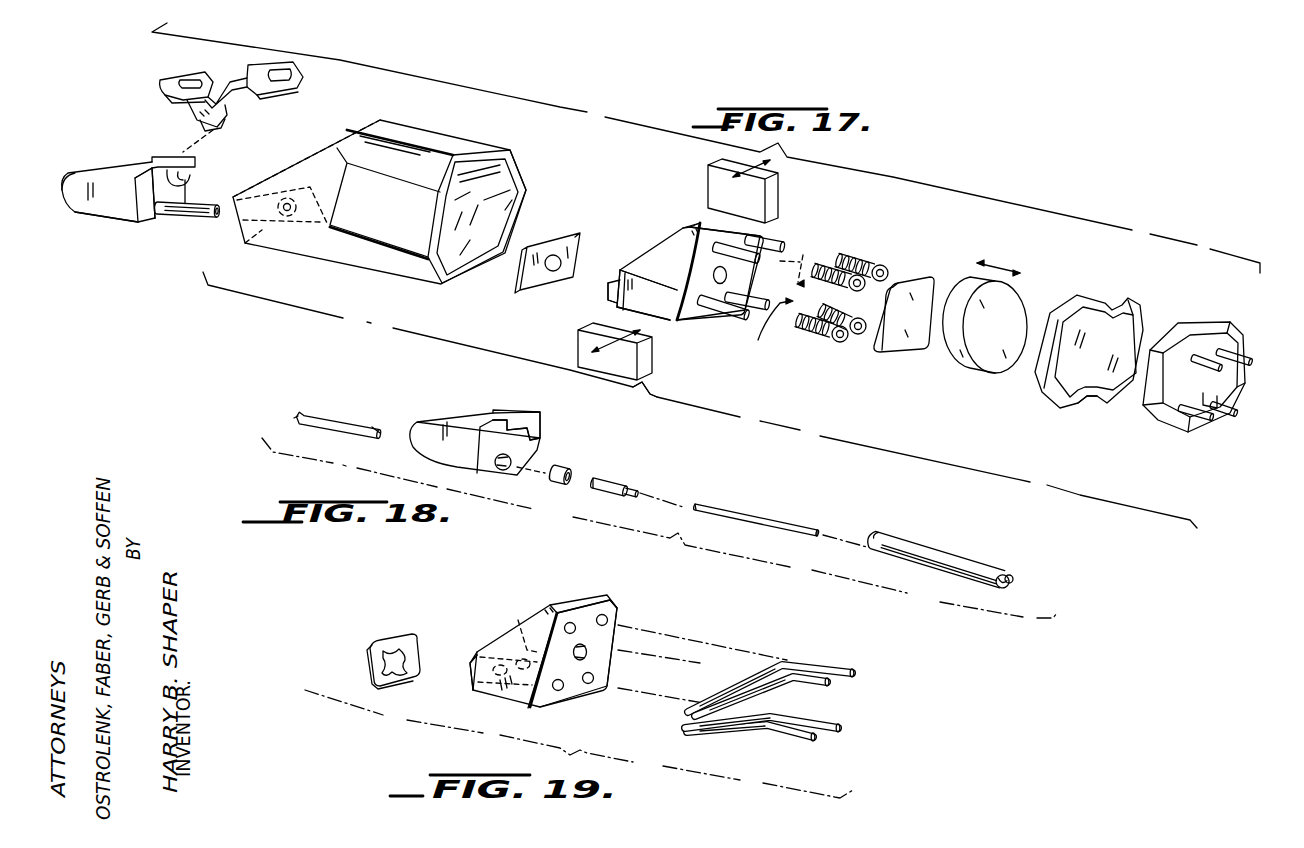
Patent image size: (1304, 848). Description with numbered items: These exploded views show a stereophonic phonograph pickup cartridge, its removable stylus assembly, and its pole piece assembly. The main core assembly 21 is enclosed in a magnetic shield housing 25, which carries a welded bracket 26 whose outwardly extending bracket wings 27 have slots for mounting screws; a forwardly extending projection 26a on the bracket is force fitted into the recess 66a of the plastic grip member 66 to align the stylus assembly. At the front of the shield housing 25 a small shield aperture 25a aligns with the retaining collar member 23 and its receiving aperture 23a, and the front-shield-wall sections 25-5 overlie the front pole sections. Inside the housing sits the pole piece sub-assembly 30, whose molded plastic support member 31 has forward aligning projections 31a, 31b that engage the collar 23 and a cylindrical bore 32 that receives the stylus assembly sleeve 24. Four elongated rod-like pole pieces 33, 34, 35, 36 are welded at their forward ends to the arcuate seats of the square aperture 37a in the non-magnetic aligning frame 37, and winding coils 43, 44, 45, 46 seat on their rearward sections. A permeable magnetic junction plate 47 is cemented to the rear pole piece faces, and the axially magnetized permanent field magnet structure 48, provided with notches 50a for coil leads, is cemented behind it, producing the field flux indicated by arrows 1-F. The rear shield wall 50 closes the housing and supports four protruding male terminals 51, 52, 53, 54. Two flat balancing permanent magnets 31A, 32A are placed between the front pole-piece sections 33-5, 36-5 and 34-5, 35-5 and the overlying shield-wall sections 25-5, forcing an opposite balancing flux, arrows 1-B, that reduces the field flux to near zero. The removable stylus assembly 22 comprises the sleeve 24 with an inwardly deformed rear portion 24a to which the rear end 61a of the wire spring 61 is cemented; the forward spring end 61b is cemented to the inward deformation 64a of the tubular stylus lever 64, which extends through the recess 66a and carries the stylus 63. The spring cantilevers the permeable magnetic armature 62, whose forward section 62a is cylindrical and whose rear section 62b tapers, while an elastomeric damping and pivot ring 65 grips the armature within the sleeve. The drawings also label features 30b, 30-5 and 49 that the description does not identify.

In FIG. 17, the main core assembly 21 is at (647, 397).
In FIG. 17, the armature stylus assembly 22 is at (156, 132).
In FIG. 18, the armature stylus assembly 22 is at (495, 385).
In FIG. 17, the retaining collar member 23 is at (567, 237).
In FIG. 17, the receiving aperture 23a is at (553, 272).
In FIG. 17, the stylus assembly sleeve 24 is at (183, 216).
In FIG. 18, the stylus assembly sleeve 24 is at (940, 522).
In FIG. 18, the rearward sleeve deformation 24a is at (1014, 568).
In FIG. 17, the shield housing 25 is at (524, 184).
In FIG. 17, the shield aperture 25a is at (243, 262).
In FIG. 17, the front-shield-wall sections 25-5 is at (290, 170).
In FIG. 17, the bracket 26 is at (218, 72).
In FIG. 17, the aligning and retaining projection 26a is at (225, 120).
In FIG. 17, the bracket wings 27 is at (172, 72).
In FIG. 17, the pole piece sub-assembly 30 is at (658, 240).
In FIG. 19, the pole piece sub-assembly 30 is at (487, 610).
In FIG. 17, the bracket end face 30b is at (612, 283).
In FIG. 17, the bracket base leg 30-5 is at (667, 312).
In FIG. 19, the bracket base leg 30-5 is at (487, 693).
In FIG. 17, the plastic pole piece support 31 is at (648, 251).
In FIG. 19, the plastic pole piece support 31 is at (541, 610).
In FIG. 19, the forward aligning projection 31a is at (477, 670).
In FIG. 19, the forward aligning projection 31b is at (520, 628).
In FIG. 17, the balancing permanent magnet 31A is at (790, 190).
In FIG. 17, the bore 32 is at (712, 277).
In FIG. 19, the bore 32 is at (588, 655).
In FIG. 17, the balancing permanent magnet 32A is at (657, 357).
In FIG. 17, the pole piece 33 is at (725, 248).
In FIG. 19, the pole piece 33 is at (808, 688).
In FIG. 17, the pole piece 34 is at (775, 240).
In FIG. 19, the pole piece 34 is at (842, 668).
In FIG. 17, the pole piece 35 is at (752, 302).
In FIG. 19, the pole piece 35 is at (834, 722).
In FIG. 17, the pole piece 36 is at (725, 318).
In FIG. 19, the pole piece 36 is at (778, 740).
In FIG. 19, the front pole-piece section 33-5 is at (745, 683).
In FIG. 19, the front pole-piece section 34-5 is at (759, 690).
In FIG. 19, the front pole-piece section 35-5 is at (783, 710).
In FIG. 19, the front pole-piece section 36-5 is at (733, 730).
In FIG. 19, the aligning frame 37 is at (413, 627).
In FIG. 19, the square aperture 37a is at (393, 665).
In FIG. 17, the field flux arrows 1-F is at (800, 263).
In FIG. 17, the balancing flux arrows 1-B is at (771, 331).
In FIG. 17, the winding coil 43 is at (838, 292).
In FIG. 17, the winding coil 44 is at (882, 265).
In FIG. 17, the winding coil 45 is at (848, 289).
In FIG. 17, the winding coil 46 is at (836, 342).
In FIG. 17, the magnetic junction plate 47 is at (912, 285).
In FIG. 17, the permanent field magnet structure 48 is at (970, 372).
In FIG. 17, the end cap 49 is at (1197, 307).
In FIG. 17, the rear shield wall 50 is at (1102, 300).
In FIG. 17, the notches 50a is at (1087, 410).
In FIG. 17, the male terminal 51 is at (1210, 366).
In FIG. 17, the male terminal 52 is at (1252, 360).
In FIG. 17, the male terminal 53 is at (1240, 414).
In FIG. 17, the male terminal 54 is at (1210, 418).
In FIG. 18, the wire spring 61 is at (750, 512).
In FIG. 18, the rear spring end 61a is at (803, 528).
In FIG. 18, the forward spring end 61b is at (713, 493).
In FIG. 18, the armature 62 is at (632, 463).
In FIG. 18, the forward armature section 62a is at (600, 494).
In FIG. 18, the rear armature section 62b is at (630, 489).
In FIG. 17, the stylus 63 is at (82, 212).
In FIG. 18, the stylus 63 is at (297, 419).
In FIG. 17, the stylus lever 64 is at (92, 213).
In FIG. 18, the stylus lever 64 is at (337, 412).
In FIG. 18, the stylus lever deformation 64a is at (382, 419).
In FIG. 18, the damping and pivot support ring 65 is at (571, 465).
In FIG. 17, the plastic grip member 66 is at (138, 222).
In FIG. 18, the plastic grip member 66 is at (453, 470).
In FIG. 17, the recess 66a is at (190, 177).
In FIG. 18, the recess 66a is at (530, 420).